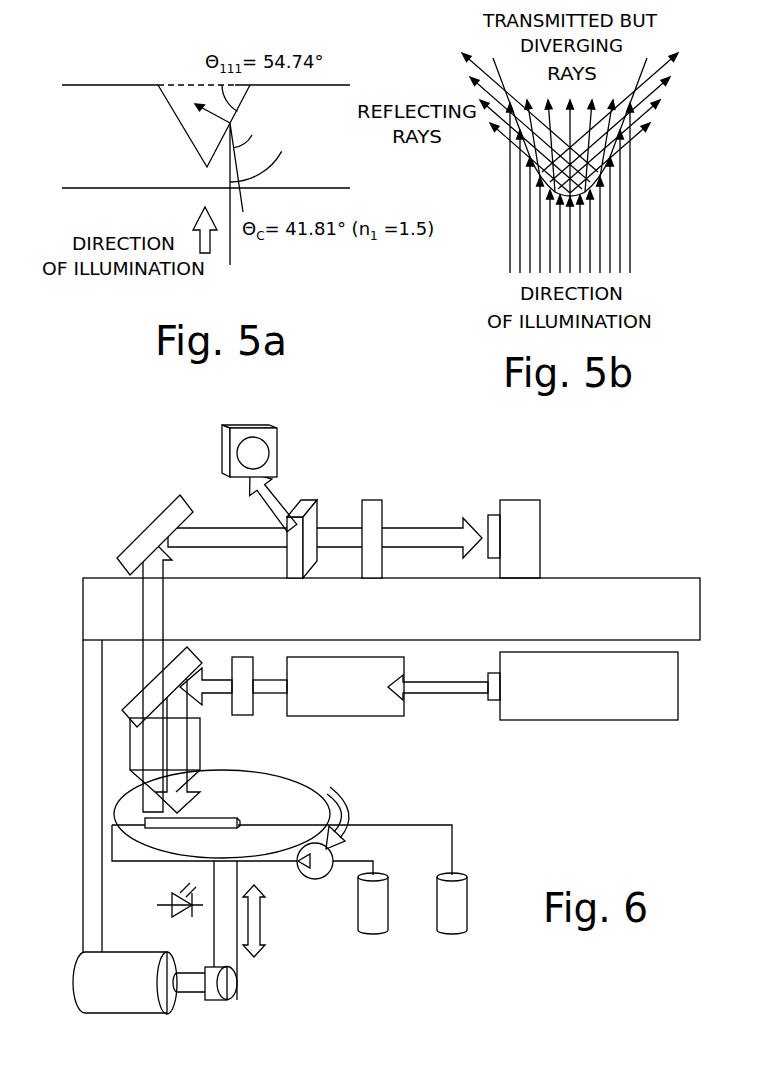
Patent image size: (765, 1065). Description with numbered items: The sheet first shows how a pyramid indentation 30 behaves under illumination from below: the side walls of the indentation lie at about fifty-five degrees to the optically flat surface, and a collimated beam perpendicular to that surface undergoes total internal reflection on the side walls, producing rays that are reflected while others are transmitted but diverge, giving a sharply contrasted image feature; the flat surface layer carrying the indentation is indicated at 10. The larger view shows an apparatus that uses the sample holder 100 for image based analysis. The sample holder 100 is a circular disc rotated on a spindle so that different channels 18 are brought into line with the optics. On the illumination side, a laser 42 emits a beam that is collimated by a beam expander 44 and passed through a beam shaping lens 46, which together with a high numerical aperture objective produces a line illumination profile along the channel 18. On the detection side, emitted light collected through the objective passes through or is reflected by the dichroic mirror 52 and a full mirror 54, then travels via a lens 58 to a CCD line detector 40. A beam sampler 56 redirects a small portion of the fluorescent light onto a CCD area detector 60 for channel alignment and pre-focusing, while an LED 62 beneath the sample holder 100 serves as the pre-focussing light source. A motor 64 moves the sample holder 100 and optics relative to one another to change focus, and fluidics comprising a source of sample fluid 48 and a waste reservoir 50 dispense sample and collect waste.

In FIG. 5A, the substrate 10 is at (93, 85).
In FIG. 5A, the pyramid indentation 30 is at (180, 125).
In FIG. 6, the channel 18 is at (145, 822).
In FIG. 6, the CCD line detector 40 is at (525, 498).
In FIG. 6, the laser 42 is at (577, 699).
In FIG. 6, the beam expander 44 is at (322, 697).
In FIG. 6, the beam shaping lens 46 is at (247, 717).
In FIG. 6, the source of sample fluid 48 is at (360, 917).
In FIG. 6, the waste reservoir 50 is at (439, 917).
In FIG. 6, the dichroic mirror 52 is at (130, 702).
In FIG. 6, the full mirror 54 is at (148, 524).
In FIG. 6, the beam sampler 56 is at (307, 502).
In FIG. 6, the lens 58 is at (373, 500).
In FIG. 6, the CCD area detector 60 is at (223, 435).
In FIG. 6, the LED 62 is at (173, 902).
In FIG. 6, the motor 64 is at (102, 994).
In FIG. 6, the sample holder 100 is at (215, 808).